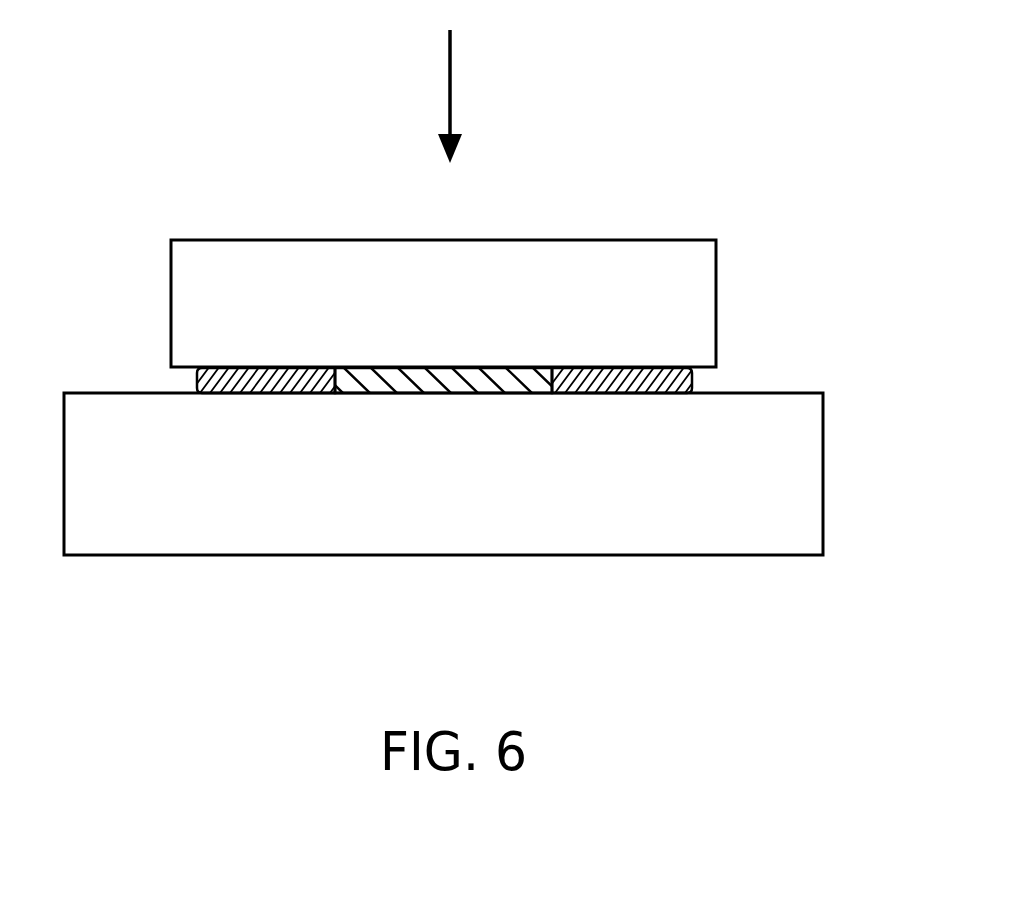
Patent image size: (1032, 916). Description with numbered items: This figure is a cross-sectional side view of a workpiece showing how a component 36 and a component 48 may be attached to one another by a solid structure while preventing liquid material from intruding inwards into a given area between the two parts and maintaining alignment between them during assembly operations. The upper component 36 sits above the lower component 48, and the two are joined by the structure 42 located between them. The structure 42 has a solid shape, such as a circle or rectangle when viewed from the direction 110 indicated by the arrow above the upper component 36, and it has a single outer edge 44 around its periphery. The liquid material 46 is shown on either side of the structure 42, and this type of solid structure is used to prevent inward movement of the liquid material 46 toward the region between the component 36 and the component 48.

The direction 110 is at (450, 82).
The component 36 is at (703, 301).
The outer edge 44 is at (333, 386).
The liquid material 46 is at (261, 393).
The structure 42 is at (430, 393).
The component 48 is at (802, 477).